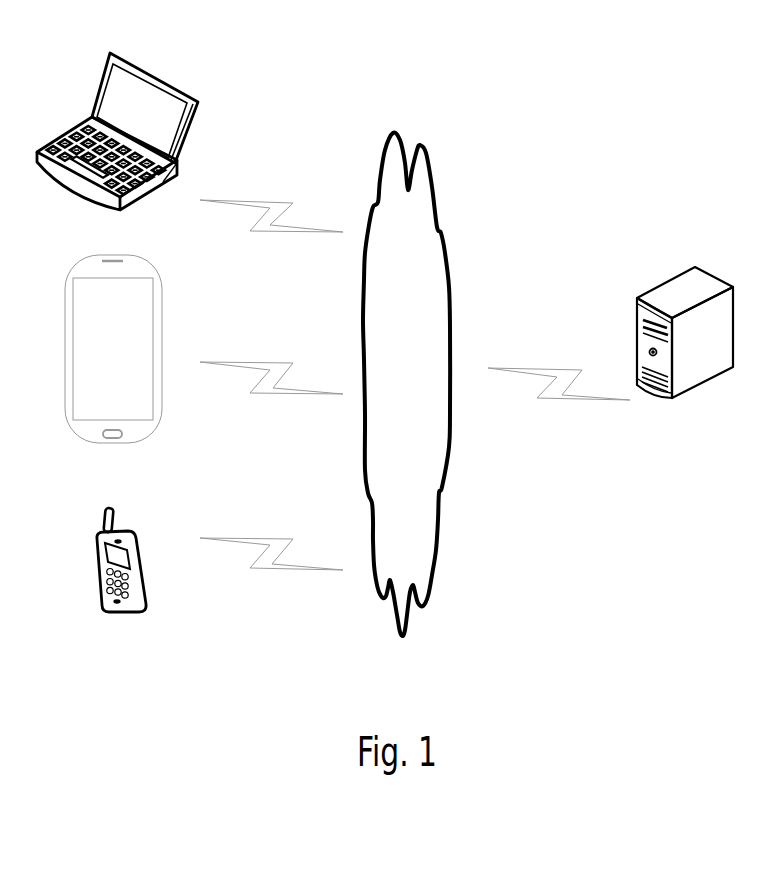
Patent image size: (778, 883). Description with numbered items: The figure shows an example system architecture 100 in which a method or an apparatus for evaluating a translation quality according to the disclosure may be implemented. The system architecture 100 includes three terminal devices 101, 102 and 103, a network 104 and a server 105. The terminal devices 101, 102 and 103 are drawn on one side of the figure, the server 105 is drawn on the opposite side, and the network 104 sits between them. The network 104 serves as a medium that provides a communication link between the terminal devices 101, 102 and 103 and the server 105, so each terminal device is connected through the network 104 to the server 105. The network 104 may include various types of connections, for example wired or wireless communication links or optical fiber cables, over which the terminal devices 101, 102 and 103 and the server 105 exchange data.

The system architecture 100 is at (657, 41).
The terminal device 101 is at (121, 580).
The terminal device 102 is at (113, 378).
The terminal device 103 is at (117, 150).
The network 104 is at (406, 384).
The server 105 is at (685, 366).